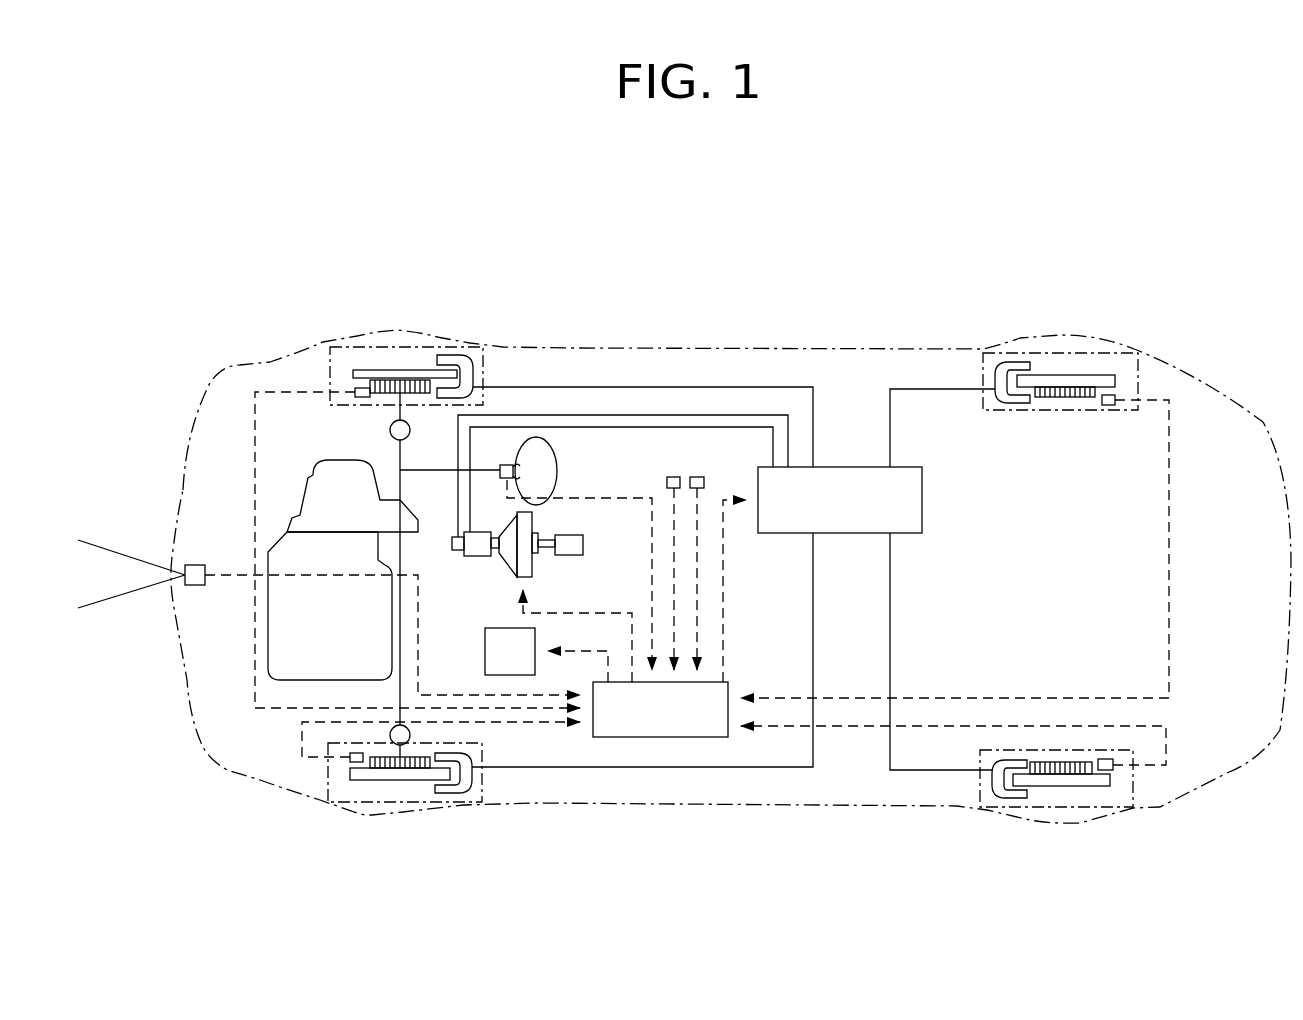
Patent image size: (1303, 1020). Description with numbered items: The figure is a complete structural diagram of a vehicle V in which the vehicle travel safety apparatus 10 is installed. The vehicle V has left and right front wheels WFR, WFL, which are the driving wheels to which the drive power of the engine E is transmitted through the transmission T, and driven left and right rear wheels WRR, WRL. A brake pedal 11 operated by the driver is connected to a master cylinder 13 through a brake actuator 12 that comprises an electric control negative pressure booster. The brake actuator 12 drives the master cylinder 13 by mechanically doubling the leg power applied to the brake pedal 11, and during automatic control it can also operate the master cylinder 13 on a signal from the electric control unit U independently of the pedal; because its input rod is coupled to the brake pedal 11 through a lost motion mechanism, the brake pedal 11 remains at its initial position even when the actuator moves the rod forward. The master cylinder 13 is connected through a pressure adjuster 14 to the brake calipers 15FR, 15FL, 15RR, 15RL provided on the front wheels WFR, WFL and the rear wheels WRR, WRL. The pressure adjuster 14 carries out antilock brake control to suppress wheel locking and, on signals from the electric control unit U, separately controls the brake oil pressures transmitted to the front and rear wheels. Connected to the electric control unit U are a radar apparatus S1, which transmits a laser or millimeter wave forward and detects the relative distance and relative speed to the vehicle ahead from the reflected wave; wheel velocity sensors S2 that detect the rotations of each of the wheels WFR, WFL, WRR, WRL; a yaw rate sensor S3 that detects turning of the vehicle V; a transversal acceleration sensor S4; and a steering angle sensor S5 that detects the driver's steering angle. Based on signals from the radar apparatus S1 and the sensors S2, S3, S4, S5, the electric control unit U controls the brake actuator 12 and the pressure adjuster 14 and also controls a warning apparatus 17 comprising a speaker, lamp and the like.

The vehicle V is at (727, 319).
The front right wheel WFR is at (387, 347).
The front left wheel WFL is at (373, 817).
The rear right wheel WRR is at (1058, 352).
The rear left wheel WRL is at (1047, 810).
The brake caliper 15FR is at (458, 355).
The brake caliper 15FL is at (450, 796).
The brake caliper 15RR is at (999, 356).
The brake caliper 15RL is at (1013, 803).
The radar apparatus S1 is at (195, 586).
The vehicle wheel velocity sensor S2 is at (1120, 850).
The yaw rate sensor S3 is at (673, 477).
The transversal acceleration sensor S4 is at (703, 477).
The steering angle sensor S5 is at (547, 452).
The transmission T is at (353, 518).
The engine E is at (340, 627).
The vehicle travel safety apparatus 10 is at (660, 776).
The electric control unit U is at (660, 709).
The brake pedal 11 is at (584, 545).
The brake actuator 12 is at (521, 567).
The master cylinder 13 is at (462, 557).
The pressure adjuster 14 is at (857, 525).
The warning apparatus 17 is at (527, 672).